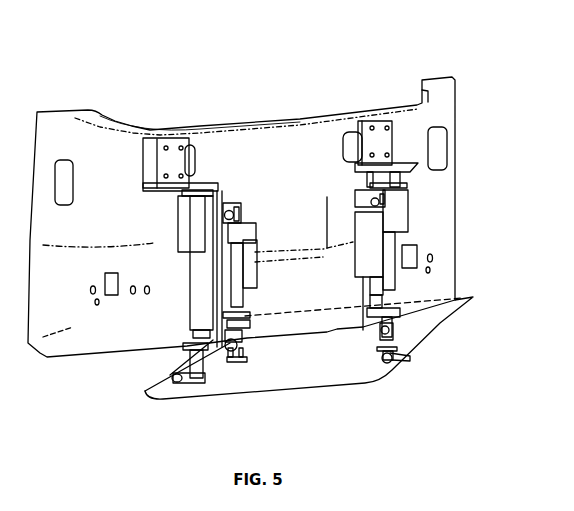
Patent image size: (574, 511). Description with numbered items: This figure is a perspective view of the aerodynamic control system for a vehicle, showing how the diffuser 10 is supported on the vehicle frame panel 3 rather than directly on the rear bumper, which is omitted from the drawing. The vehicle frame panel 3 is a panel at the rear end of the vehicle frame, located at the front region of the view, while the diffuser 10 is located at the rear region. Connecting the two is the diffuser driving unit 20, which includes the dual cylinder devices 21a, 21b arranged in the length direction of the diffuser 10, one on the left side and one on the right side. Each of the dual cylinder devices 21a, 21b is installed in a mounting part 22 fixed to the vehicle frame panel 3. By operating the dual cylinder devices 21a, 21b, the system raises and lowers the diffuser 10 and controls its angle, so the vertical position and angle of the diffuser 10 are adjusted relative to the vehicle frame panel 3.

The vehicle frame panel 3 is at (93, 333).
The diffuser 10 is at (283, 377).
The diffuser driving unit 20 is at (293, 55).
The dual cylinder device 21a is at (226, 217).
The dual cylinder device 21b is at (410, 156).
The mounting part 22 is at (172, 136).